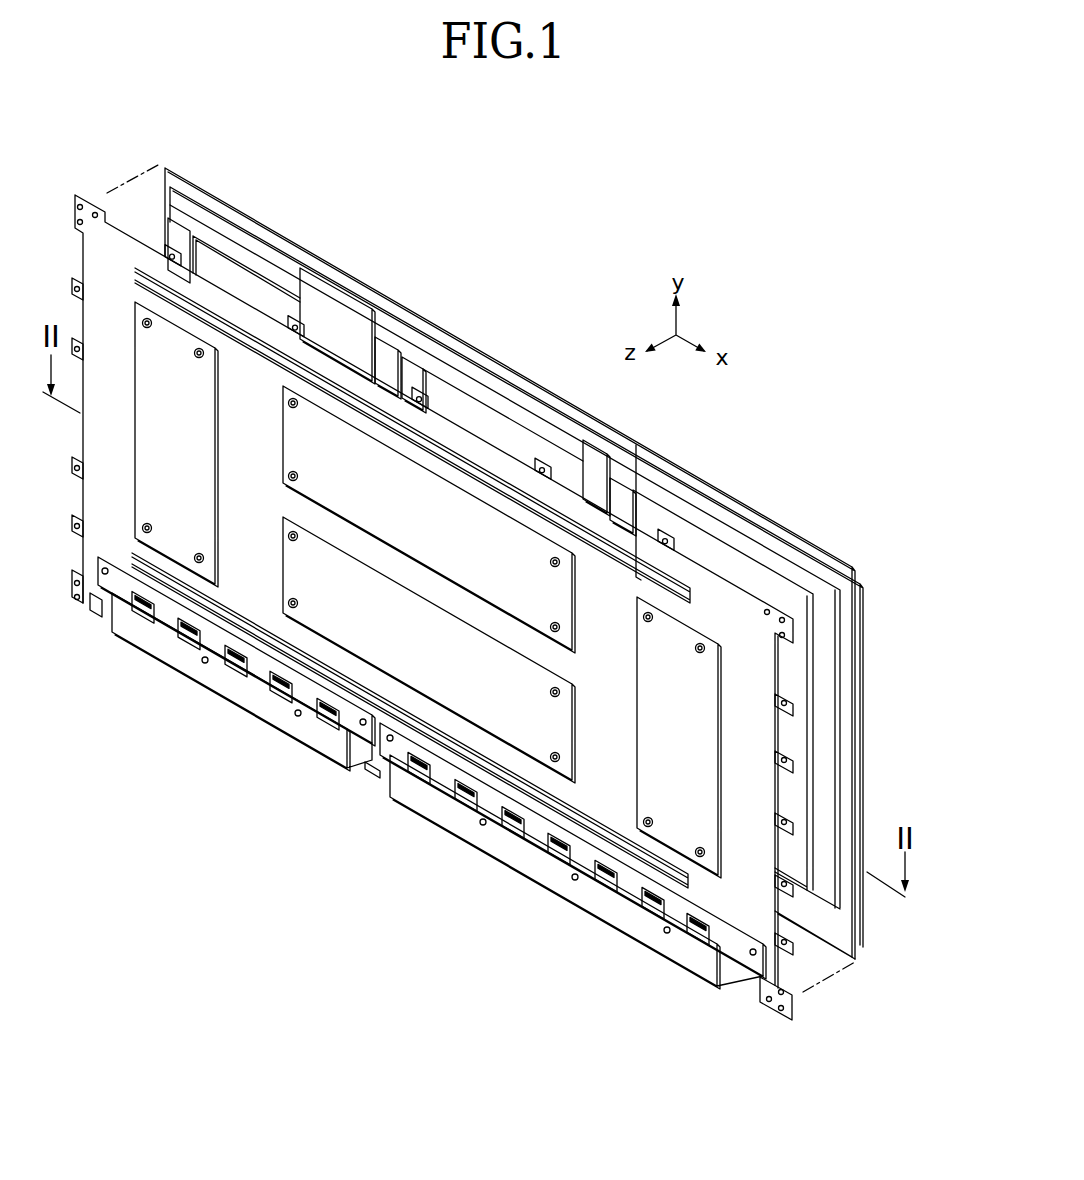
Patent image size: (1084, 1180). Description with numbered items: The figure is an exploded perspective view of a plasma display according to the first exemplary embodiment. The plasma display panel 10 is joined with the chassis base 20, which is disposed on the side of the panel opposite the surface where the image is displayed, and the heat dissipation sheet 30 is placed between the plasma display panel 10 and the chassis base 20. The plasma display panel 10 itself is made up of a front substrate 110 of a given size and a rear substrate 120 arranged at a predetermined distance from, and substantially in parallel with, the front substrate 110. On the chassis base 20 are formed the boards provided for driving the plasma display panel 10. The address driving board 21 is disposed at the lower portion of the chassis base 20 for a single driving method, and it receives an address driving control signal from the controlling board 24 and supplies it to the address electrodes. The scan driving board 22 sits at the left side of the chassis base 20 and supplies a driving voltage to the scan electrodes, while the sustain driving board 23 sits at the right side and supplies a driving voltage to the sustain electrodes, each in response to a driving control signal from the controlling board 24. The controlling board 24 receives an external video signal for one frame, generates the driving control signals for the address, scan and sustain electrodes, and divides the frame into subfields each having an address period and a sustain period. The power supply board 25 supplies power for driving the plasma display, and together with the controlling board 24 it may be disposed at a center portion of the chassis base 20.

The plasma display panel 10 is at (567, 563).
The front substrate 110 is at (925, 808).
The rear substrate 120 is at (848, 796).
The chassis base 20 is at (722, 606).
The address driving board 21 is at (262, 667).
The scan driving board 22 is at (176, 533).
The sustain driving board 23 is at (650, 788).
The controlling board 24 is at (360, 638).
The power supply board 25 is at (475, 572).
The heat dissipation sheet 30 is at (423, 380).